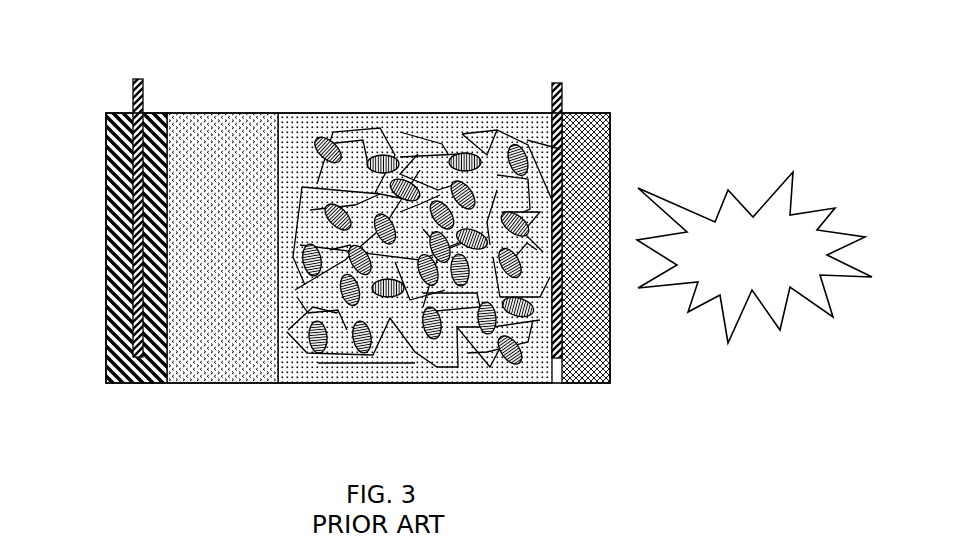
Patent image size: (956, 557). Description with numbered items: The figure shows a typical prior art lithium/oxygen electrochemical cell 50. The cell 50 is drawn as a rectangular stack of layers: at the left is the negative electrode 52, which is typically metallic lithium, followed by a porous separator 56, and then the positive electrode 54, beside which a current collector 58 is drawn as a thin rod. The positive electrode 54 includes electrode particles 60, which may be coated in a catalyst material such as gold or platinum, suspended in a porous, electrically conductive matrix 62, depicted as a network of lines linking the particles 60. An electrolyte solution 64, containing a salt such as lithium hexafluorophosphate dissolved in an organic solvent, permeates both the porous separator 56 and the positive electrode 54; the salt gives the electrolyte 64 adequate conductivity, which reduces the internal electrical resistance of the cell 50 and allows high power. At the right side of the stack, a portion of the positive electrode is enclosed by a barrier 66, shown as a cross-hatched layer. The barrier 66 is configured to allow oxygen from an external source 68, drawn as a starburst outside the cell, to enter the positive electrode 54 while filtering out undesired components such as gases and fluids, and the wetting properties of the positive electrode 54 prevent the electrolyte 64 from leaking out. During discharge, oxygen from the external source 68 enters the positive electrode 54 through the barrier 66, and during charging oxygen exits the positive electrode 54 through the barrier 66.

The lithium/oxygen electrochemical cell 50 is at (147, 57).
The negative electrode 52 is at (106, 203).
The positive electrode 54 is at (510, 383).
The porous separator 56 is at (208, 383).
The current collector 58 is at (562, 100).
The electrode particles 60 is at (312, 150).
The porous, electrically conductive matrix 62 is at (424, 150).
The electrolyte solution 64 is at (412, 383).
The barrier 66 is at (609, 128).
The external source 68 is at (793, 185).